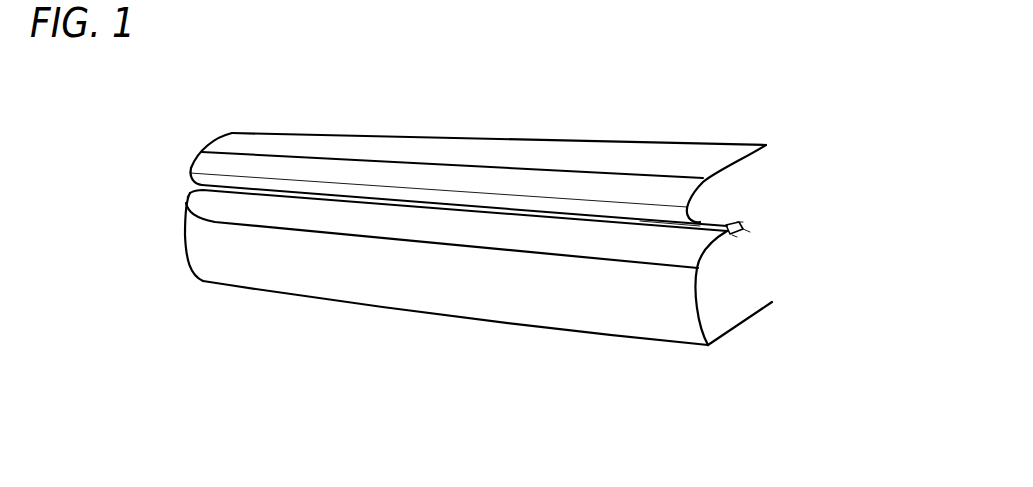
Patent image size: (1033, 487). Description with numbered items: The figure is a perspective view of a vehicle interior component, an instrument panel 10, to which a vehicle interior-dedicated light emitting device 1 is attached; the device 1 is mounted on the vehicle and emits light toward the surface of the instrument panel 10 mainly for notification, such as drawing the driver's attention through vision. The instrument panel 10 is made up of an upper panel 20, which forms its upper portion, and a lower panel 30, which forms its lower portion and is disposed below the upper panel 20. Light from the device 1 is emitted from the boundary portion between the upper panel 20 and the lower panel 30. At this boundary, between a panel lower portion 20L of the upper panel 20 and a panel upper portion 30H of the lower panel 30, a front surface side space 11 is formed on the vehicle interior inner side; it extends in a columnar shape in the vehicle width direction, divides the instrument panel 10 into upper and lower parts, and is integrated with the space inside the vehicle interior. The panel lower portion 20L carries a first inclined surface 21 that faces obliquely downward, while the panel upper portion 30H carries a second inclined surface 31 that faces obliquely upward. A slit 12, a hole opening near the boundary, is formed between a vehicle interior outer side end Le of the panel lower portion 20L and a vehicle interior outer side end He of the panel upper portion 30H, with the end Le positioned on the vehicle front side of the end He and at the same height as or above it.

The vehicle interior-dedicated light emitting device 1 is at (762, 238).
The instrument panel 10 is at (727, 138).
The front surface side space 11 is at (655, 230).
The slit 12 is at (737, 220).
The upper panel 20 is at (563, 153).
The first inclined surface 21 is at (310, 185).
The panel lower portion 20L is at (188, 178).
The lower panel 30 is at (542, 308).
The second inclined surface 31 is at (400, 223).
The panel upper portion 30H is at (187, 197).
The vehicle interior outer side end Le is at (737, 222).
The vehicle interior outer side end He is at (737, 237).